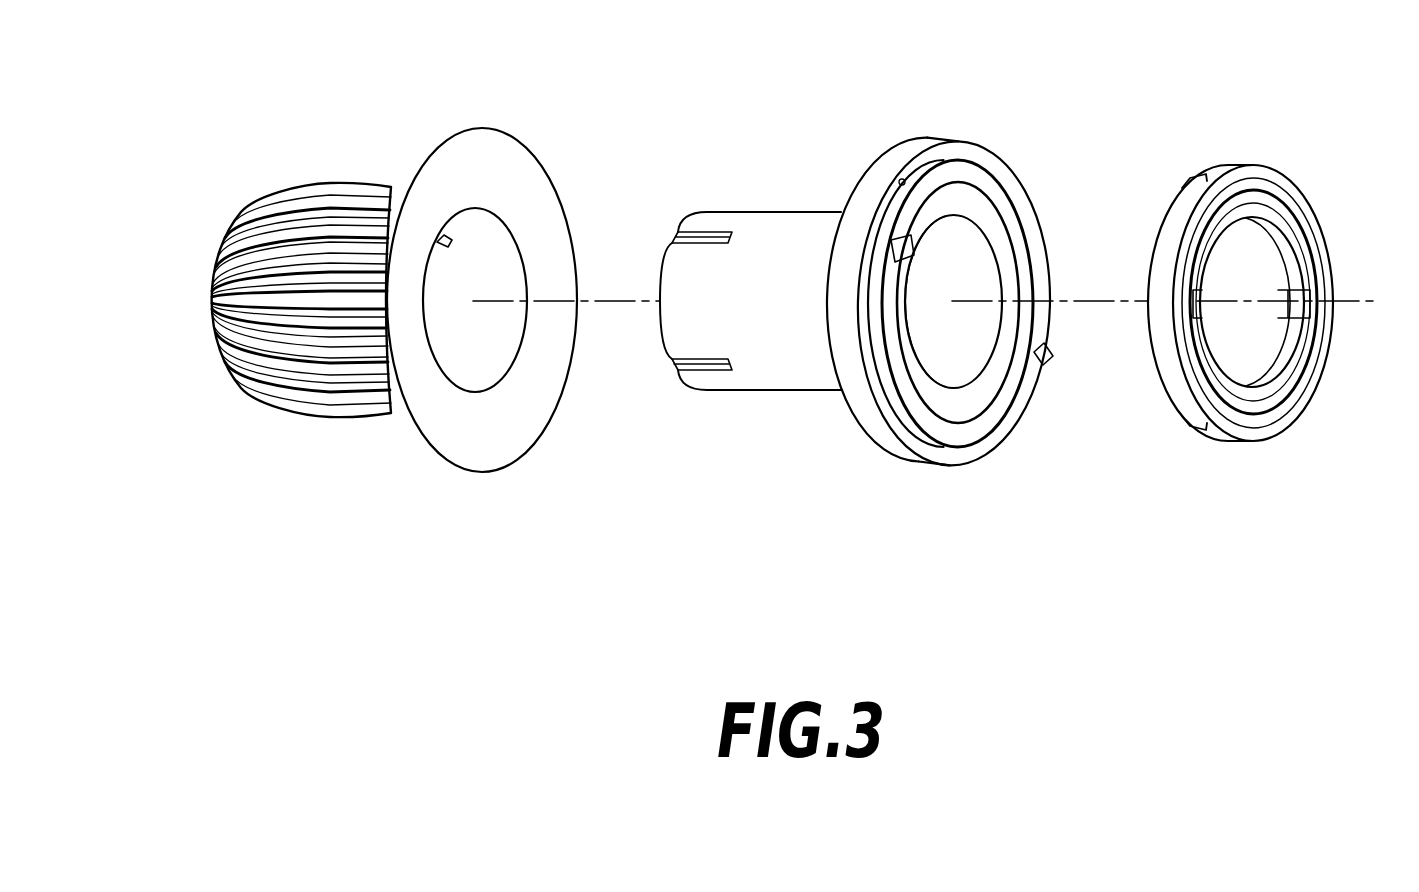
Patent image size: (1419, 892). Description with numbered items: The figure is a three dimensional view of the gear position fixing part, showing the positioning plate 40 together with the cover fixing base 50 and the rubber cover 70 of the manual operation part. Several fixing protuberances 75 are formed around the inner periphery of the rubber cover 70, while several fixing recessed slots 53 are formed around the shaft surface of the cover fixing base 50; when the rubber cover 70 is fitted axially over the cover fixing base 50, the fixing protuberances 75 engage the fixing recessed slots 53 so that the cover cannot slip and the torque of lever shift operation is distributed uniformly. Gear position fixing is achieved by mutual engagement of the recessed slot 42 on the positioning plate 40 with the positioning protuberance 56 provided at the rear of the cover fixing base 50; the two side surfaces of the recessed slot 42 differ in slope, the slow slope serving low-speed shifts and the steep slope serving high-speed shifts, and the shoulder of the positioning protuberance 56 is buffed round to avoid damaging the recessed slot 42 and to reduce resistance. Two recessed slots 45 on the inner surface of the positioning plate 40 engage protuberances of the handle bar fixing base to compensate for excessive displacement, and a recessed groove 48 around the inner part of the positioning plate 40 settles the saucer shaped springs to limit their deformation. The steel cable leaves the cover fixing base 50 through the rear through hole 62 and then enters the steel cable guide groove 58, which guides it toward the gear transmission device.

The positioning plate 40 is at (1328, 399).
The recessed slot 42 is at (1200, 176).
The recessed slots 45 is at (1277, 235).
The recessed groove 48 is at (1312, 290).
The cover fixing base 50 is at (783, 420).
The fixing recessed slots 53 is at (701, 239).
The positioning protuberance 56 is at (1050, 366).
The steel cable guide groove 58 is at (931, 453).
The rear through hole 62 is at (899, 181).
The rubber cover 70 is at (205, 204).
The fixing protuberances 75 is at (449, 233).